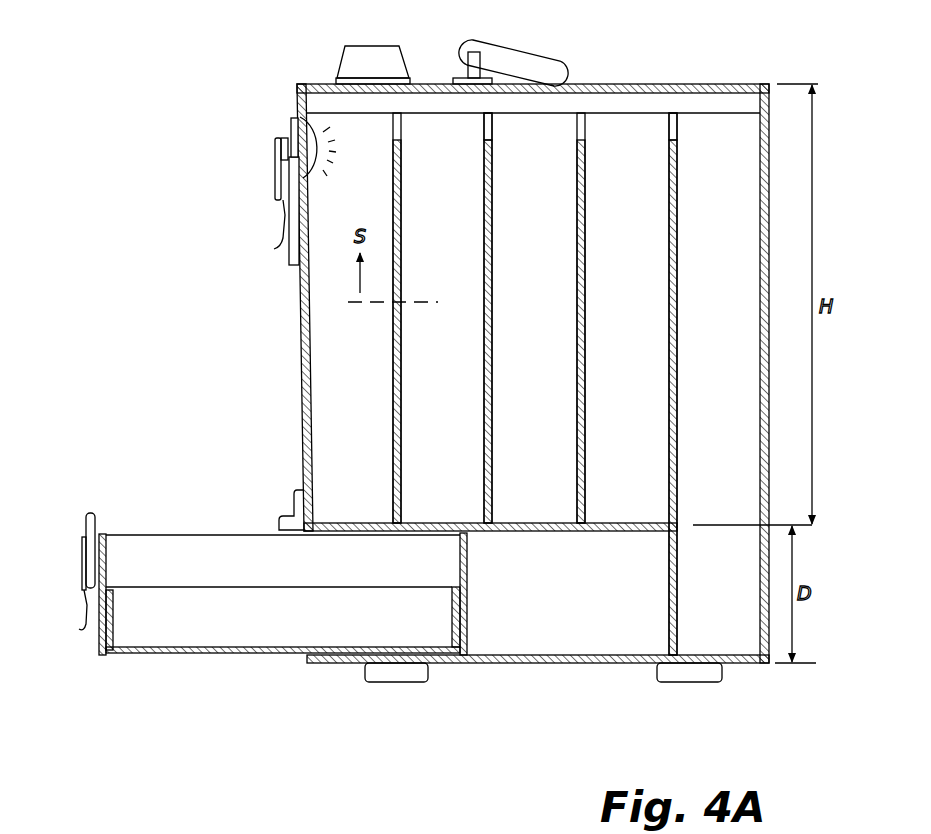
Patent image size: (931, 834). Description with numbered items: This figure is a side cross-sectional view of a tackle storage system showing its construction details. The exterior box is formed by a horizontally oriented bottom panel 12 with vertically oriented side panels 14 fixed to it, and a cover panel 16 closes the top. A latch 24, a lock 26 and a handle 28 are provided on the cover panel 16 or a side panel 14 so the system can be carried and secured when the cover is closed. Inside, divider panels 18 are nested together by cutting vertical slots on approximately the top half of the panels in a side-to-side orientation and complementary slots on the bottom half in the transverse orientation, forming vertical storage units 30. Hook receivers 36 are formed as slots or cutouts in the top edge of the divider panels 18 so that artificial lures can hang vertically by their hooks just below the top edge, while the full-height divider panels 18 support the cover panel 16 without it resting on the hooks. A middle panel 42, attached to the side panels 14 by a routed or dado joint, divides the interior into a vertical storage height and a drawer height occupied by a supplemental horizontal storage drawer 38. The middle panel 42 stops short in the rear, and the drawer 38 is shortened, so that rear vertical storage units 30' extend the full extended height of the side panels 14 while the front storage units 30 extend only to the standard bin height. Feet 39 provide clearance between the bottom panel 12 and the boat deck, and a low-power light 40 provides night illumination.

The bottom panel 12 is at (479, 663).
The side panels 14 is at (304, 398).
The cover panel 16 is at (637, 82).
The divider panels 18 is at (495, 209).
The latch 24 is at (82, 547).
The lock 26 is at (364, 45).
The handle 28 is at (508, 44).
The storage units 30 is at (535, 318).
The rear vertical storage units 30' is at (718, 318).
The hook receivers 36 is at (488, 128).
The storage drawer 38 is at (68, 512).
The feet 39 is at (391, 672).
The low-power light 40 is at (298, 120).
The middle panel 42 is at (615, 523).